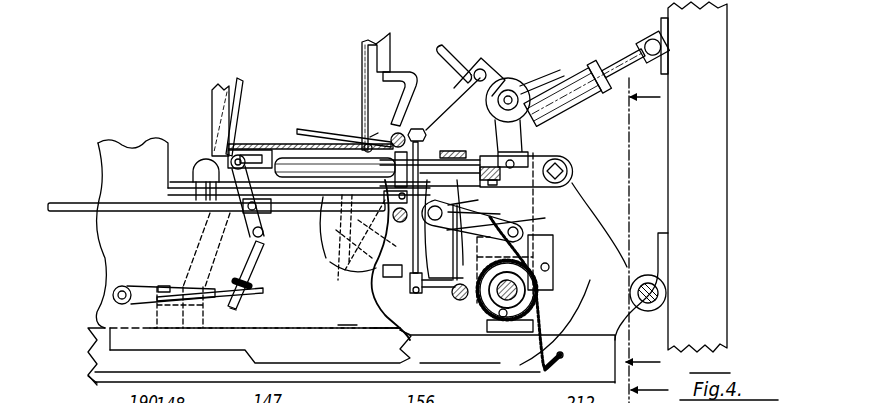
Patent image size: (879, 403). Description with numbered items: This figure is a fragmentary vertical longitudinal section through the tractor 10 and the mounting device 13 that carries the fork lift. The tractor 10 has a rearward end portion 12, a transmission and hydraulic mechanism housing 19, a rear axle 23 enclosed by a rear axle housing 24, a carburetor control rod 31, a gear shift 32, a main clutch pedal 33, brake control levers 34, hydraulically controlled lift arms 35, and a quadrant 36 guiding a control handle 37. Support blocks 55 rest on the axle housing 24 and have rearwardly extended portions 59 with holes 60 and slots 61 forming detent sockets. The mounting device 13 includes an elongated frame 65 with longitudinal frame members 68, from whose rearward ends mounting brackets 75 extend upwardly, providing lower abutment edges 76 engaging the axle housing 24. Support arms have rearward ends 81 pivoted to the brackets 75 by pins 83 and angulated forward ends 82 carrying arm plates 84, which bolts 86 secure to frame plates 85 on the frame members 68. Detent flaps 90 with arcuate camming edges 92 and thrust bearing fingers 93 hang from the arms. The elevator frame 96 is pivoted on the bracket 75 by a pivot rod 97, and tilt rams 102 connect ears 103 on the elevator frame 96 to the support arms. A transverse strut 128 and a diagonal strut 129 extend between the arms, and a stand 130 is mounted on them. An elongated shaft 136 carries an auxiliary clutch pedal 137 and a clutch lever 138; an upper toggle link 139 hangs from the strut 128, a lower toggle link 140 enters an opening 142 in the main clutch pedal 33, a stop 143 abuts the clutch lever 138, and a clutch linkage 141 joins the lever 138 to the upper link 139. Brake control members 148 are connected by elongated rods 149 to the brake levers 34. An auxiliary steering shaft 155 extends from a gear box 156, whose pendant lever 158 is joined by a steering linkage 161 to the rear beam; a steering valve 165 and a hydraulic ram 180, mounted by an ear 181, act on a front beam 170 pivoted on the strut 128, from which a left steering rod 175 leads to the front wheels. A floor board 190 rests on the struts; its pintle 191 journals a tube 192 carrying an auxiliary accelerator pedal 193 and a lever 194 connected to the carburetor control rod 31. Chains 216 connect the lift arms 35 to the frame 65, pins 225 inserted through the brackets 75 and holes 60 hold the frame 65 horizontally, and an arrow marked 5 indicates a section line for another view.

The tractor 10 is at (96, 142).
The carburetor control rod 31 is at (181, 185).
The longitudinal frame members 68 is at (100, 347).
The elongated frame 65 is at (86, 379).
The rearward end portion 12 is at (418, 356).
The frame plates 85 is at (182, 324).
The elevator frame 96 is at (727, 112).
The mounting brackets 75 is at (630, 246).
The pivot rod 97 is at (665, 284).
The ears 103 is at (668, 27).
The section arrow 5 is at (645, 84).
The mounting device 13 is at (647, 370).
The tilt rams 102 is at (588, 62).
The gear box 156 is at (533, 84).
The brake control members 148 is at (485, 90).
The auxiliary steering shaft 155 is at (456, 55).
The elongated shaft 136 is at (406, 133).
The clutch lever 138 is at (430, 160).
The stand 130 is at (362, 47).
The auxiliary clutch pedal 137 is at (398, 68).
The tube 192 is at (365, 135).
The pintle 191 is at (372, 138).
The steering valve 165 is at (366, 145).
The auxiliary accelerator pedal 193 is at (300, 138).
The floor board 190 is at (282, 142).
The front beam 170 is at (258, 156).
The left steering rod 175 is at (58, 205).
The transverse strut 128 is at (227, 158).
The gear shift 32 is at (236, 80).
The upper toggle link 139 is at (249, 226).
The lower toggle link 140 is at (250, 262).
The stop 143 is at (258, 300).
The bolts 86 is at (168, 285).
The main clutch pedal 33 is at (227, 288).
The opening 142 is at (254, 300).
The arm plates 84 is at (180, 284).
The forward ends 82 is at (203, 234).
The hydraulic ram 180 is at (358, 237).
The clutch linkage 141 is at (313, 227).
The lever 194 is at (344, 268).
The control handle 37 is at (366, 260).
The transmission and hydraulic mechanism housing 19 is at (369, 318).
The elongated rods 149 is at (385, 271).
The quadrant 36 is at (407, 230).
The brake control levers 34 is at (443, 288).
The support blocks 55 is at (461, 301).
The diagonal strut 129 is at (444, 229).
The thrust bearing fingers 93 is at (445, 245).
The steering linkage 161 is at (453, 224).
The lift arms 35 is at (476, 208).
The ear 181 is at (500, 176).
The pendant lever 158 is at (544, 154).
The rearward ends 81 is at (568, 161).
The pins 83 is at (567, 172).
The detent flaps 90 is at (523, 201).
The camming edges 92 is at (532, 214).
The rearwardly extended portions 59 is at (583, 226).
The holes 60 is at (553, 273).
The pins 225 is at (550, 267).
The rear axle 23 is at (518, 293).
The slots or grooves 61 is at (489, 306).
The lower abutment edges 76 is at (503, 320).
The rear axle housing 24 is at (540, 367).
The chains 216 is at (543, 325).